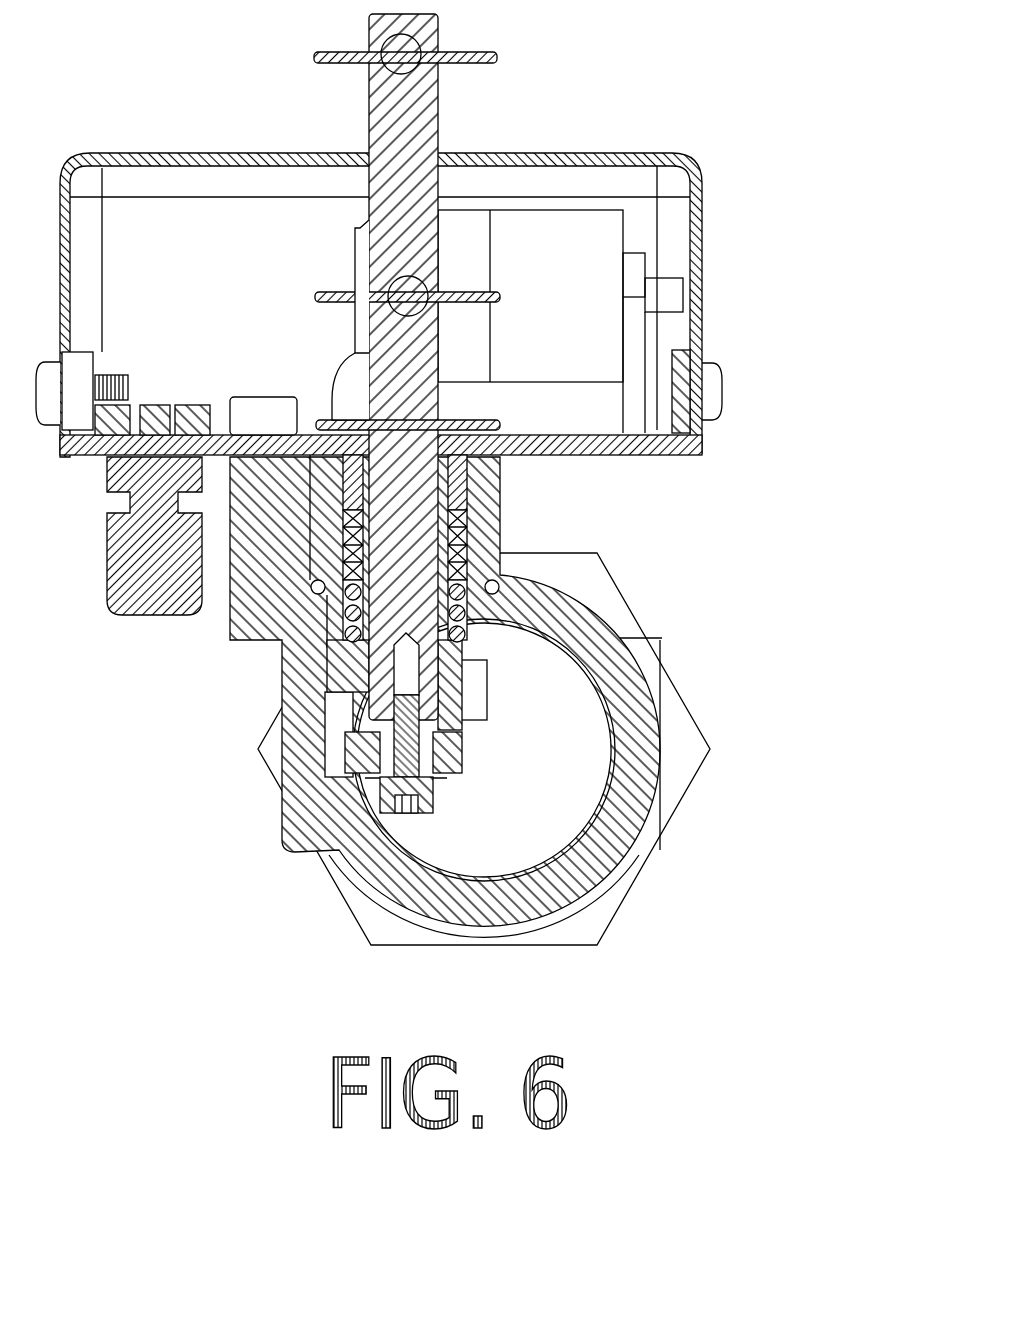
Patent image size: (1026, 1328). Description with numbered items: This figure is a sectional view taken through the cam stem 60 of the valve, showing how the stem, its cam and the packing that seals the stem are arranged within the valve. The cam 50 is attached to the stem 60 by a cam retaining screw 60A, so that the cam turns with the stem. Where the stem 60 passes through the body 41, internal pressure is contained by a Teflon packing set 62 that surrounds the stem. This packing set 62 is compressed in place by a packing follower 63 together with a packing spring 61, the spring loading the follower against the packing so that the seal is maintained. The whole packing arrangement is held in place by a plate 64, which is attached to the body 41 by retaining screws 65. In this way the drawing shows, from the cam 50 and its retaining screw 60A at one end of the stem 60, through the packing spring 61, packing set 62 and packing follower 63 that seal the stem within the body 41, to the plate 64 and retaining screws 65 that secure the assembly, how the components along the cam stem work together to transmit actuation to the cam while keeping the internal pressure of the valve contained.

The body 41 is at (265, 580).
The cam 50 is at (495, 700).
The cam stem 60 is at (410, 128).
The cam retaining screw 60A is at (388, 790).
The packing spring 61 is at (460, 592).
The packing set 62 is at (458, 520).
The packing follower 63 is at (458, 492).
The plate 64 is at (522, 436).
The retaining screws 65 is at (265, 412).